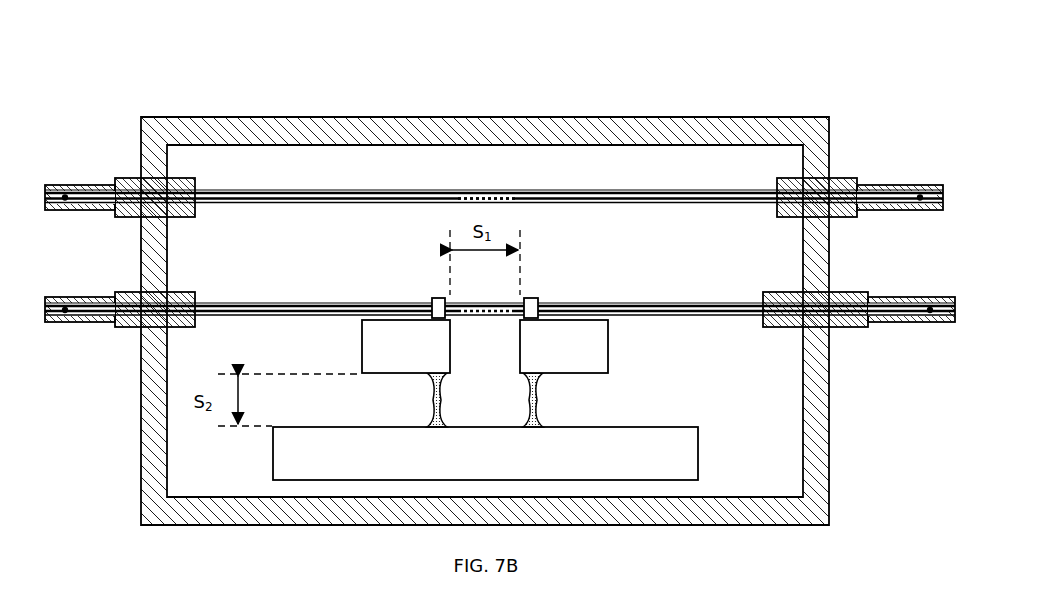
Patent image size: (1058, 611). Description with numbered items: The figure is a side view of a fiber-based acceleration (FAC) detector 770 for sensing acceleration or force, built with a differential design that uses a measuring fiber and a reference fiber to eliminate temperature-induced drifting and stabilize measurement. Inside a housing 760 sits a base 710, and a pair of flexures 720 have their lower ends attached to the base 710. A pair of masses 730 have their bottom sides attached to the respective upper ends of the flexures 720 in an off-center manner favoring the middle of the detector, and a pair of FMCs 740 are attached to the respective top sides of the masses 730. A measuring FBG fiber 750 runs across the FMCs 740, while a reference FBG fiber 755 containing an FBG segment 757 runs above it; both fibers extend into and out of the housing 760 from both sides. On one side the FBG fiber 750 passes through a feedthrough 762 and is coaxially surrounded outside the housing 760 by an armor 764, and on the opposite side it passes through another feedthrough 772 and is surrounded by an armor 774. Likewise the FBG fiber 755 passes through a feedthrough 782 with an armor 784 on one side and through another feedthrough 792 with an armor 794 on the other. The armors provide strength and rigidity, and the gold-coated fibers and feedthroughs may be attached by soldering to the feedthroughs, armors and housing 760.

The base 710 is at (485, 453).
The flexures 720 is at (427, 377).
The masses 730 is at (362, 347).
The FMCs 740 is at (436, 297).
The FBG fiber 750 is at (653, 303).
The FBG fiber 755 is at (618, 190).
The FBG segment 757 is at (515, 188).
The housing 760 is at (345, 118).
The feedthrough 762 is at (847, 328).
The armor 764 is at (925, 328).
The fiber-based acceleration (FAC) detector 770 is at (568, 82).
The feedthrough 772 is at (132, 328).
The armor 774 is at (53, 322).
The feedthrough 782 is at (847, 178).
The armor 784 is at (927, 185).
The feedthrough 792 is at (132, 178).
The armor 794 is at (53, 185).